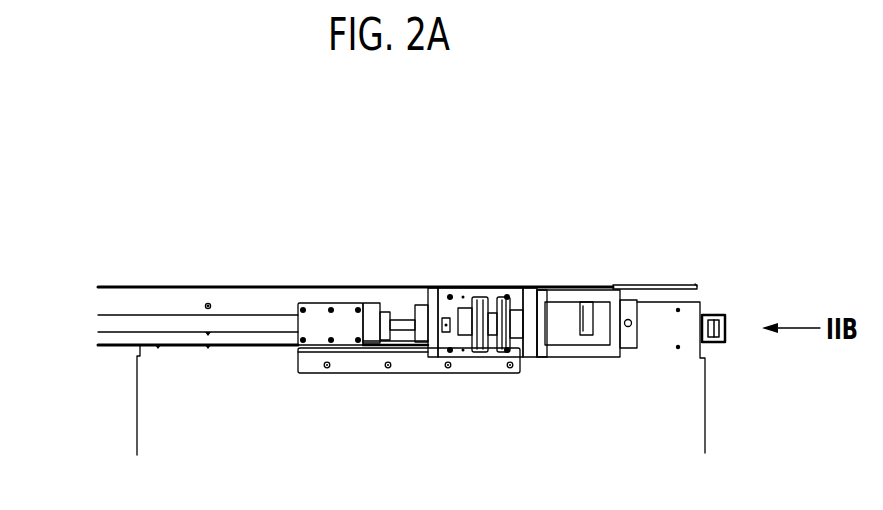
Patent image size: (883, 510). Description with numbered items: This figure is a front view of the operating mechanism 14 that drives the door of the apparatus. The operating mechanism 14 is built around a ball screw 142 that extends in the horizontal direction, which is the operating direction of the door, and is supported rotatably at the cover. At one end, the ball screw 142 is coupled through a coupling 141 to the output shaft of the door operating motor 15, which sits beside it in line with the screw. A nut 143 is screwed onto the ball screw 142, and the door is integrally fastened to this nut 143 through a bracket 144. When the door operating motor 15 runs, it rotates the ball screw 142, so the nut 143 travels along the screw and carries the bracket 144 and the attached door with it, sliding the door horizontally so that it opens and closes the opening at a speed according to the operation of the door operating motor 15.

The operating mechanism 14 is at (464, 228).
The door operating motor 15 is at (562, 332).
The coupling 141 is at (478, 355).
The ball screw 142 is at (114, 334).
The nut 143 is at (343, 323).
The bracket 144 is at (358, 367).